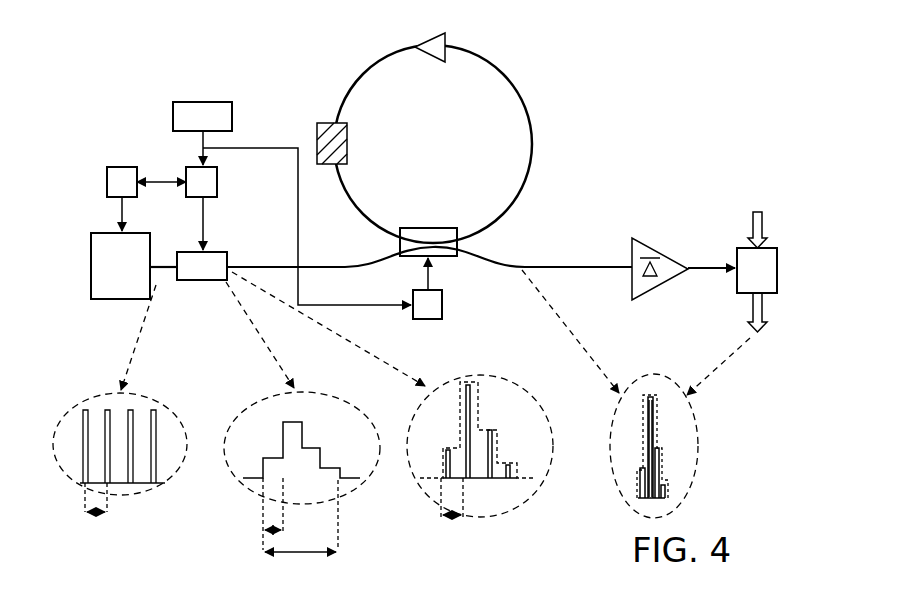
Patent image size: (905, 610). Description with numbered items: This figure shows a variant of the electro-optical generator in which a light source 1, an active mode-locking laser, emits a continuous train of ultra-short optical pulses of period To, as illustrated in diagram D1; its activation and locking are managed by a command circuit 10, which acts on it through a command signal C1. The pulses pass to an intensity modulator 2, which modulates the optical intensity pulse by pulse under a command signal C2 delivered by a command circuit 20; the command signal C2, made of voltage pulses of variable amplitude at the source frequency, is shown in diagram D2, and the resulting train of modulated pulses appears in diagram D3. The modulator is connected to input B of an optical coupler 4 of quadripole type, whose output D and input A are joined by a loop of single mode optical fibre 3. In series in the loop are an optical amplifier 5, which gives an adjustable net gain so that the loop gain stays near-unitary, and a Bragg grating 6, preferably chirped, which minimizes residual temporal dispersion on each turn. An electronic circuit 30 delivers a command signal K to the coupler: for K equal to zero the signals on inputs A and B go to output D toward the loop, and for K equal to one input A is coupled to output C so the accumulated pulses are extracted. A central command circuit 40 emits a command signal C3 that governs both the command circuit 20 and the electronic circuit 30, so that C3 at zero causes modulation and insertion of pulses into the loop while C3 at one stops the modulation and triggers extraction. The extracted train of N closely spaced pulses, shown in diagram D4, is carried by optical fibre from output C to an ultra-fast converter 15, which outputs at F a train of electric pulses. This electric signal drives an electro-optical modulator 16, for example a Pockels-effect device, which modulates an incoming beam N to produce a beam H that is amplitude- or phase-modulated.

The light source 1 is at (118, 301).
The intensity modulator 2 is at (200, 282).
The loop of single mode optical fibre 3 is at (503, 72).
The optical coupler 4 is at (432, 226).
The optical amplifier 5 is at (434, 44).
The Bragg grating 6 is at (317, 143).
The command circuit 10 is at (107, 185).
The ultra-fast converter 15 is at (660, 250).
The electro-optical modulator 16 is at (778, 268).
The command circuit 20 is at (217, 185).
The electronic circuit 30 is at (427, 320).
The central command circuit 40 is at (203, 102).
The command signal C1 is at (121, 212).
The command signal C2 is at (203, 215).
The command signal C3 is at (203, 144).
The command signal K is at (430, 277).
The train of electric pulses F is at (717, 265).
The beam N is at (751, 222).
The beam H is at (750, 322).
The diagram D1 is at (162, 482).
The diagram D2 is at (246, 488).
The diagram D3 is at (430, 497).
The diagram D4 is at (625, 500).